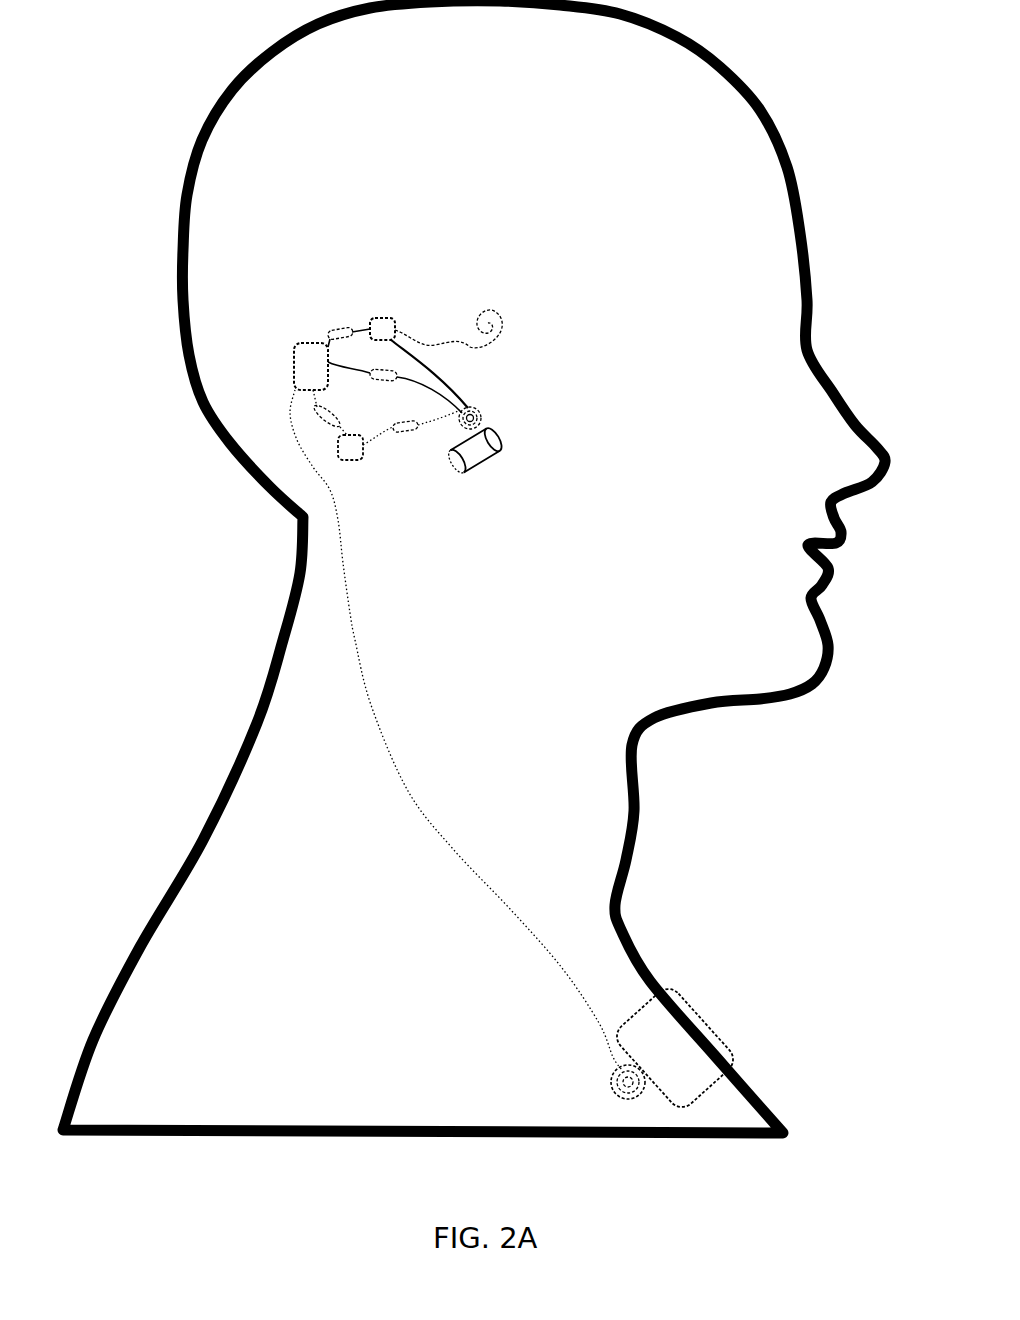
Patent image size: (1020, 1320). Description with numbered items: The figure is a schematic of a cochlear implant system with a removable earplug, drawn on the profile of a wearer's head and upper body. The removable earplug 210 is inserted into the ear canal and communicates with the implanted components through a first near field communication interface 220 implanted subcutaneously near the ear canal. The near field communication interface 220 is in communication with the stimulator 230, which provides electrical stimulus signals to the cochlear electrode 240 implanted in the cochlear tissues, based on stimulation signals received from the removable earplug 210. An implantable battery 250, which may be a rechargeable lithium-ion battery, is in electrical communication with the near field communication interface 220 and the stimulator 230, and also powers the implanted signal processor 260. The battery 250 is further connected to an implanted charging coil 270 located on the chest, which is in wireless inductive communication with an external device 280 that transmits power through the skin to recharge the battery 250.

The removable earplug 210 is at (487, 477).
The near field communication interface 220 is at (478, 408).
The stimulator 230 is at (385, 318).
The cochlear electrode 240 is at (497, 313).
The implantable battery 250 is at (300, 347).
The implanted signal processor 260 is at (363, 458).
The charging coil 270 is at (613, 1073).
The external device 280 is at (709, 1013).